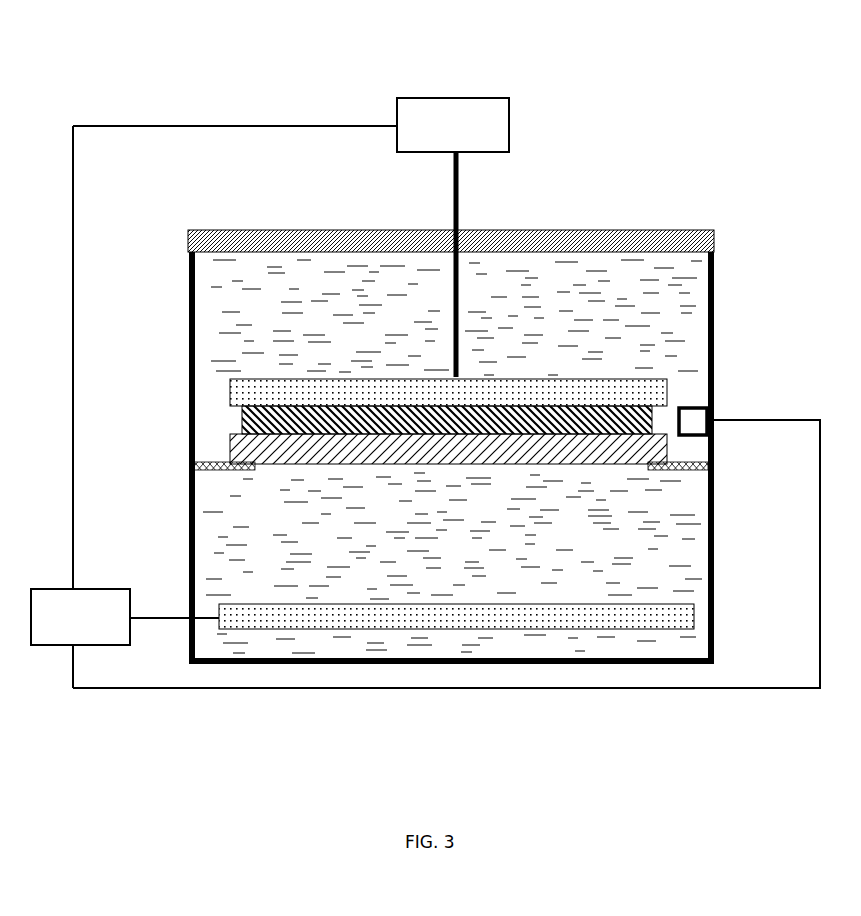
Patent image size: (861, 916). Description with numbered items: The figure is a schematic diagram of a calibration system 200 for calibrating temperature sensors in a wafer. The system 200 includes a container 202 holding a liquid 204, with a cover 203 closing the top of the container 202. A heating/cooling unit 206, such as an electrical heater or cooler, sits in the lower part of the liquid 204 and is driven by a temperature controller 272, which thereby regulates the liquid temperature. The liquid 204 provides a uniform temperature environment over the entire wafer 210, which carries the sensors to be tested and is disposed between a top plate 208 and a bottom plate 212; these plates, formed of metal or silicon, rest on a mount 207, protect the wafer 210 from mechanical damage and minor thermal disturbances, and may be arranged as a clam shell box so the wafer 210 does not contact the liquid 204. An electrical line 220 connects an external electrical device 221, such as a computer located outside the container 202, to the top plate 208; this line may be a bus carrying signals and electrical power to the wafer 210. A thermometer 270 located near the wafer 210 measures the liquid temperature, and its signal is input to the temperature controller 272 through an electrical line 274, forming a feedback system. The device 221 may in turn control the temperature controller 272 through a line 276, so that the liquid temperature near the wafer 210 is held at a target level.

The calibration system 200 is at (88, 68).
The container 202 is at (190, 300).
The cover 203 is at (673, 230).
The liquid 204 is at (697, 345).
The heating/cooling unit 206 is at (684, 610).
The mount 207 is at (700, 470).
The top plate 208 is at (240, 378).
The wafer 210 is at (242, 418).
The bottom plate 212 is at (230, 452).
The electrical line 220 is at (458, 200).
The electrical device 221 is at (453, 125).
The thermometer 270 is at (692, 420).
The temperature controller 272 is at (125, 617).
The electrical line 274 is at (697, 685).
The line 276 is at (182, 126).